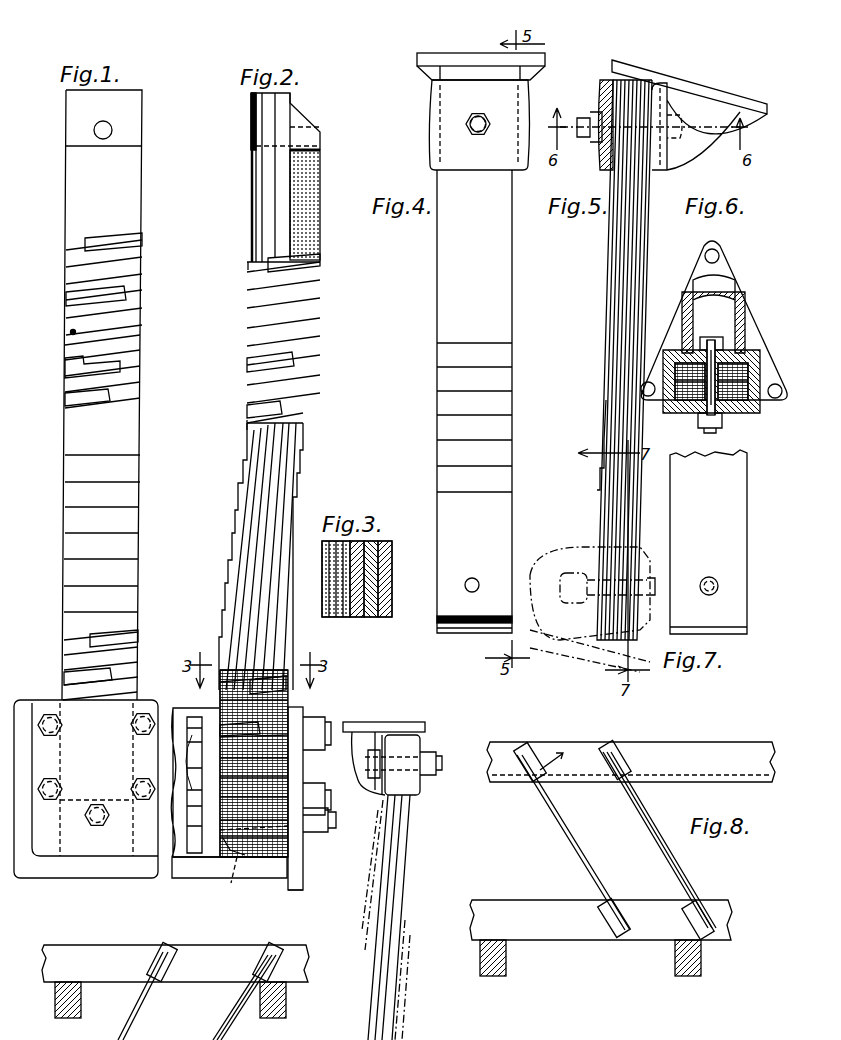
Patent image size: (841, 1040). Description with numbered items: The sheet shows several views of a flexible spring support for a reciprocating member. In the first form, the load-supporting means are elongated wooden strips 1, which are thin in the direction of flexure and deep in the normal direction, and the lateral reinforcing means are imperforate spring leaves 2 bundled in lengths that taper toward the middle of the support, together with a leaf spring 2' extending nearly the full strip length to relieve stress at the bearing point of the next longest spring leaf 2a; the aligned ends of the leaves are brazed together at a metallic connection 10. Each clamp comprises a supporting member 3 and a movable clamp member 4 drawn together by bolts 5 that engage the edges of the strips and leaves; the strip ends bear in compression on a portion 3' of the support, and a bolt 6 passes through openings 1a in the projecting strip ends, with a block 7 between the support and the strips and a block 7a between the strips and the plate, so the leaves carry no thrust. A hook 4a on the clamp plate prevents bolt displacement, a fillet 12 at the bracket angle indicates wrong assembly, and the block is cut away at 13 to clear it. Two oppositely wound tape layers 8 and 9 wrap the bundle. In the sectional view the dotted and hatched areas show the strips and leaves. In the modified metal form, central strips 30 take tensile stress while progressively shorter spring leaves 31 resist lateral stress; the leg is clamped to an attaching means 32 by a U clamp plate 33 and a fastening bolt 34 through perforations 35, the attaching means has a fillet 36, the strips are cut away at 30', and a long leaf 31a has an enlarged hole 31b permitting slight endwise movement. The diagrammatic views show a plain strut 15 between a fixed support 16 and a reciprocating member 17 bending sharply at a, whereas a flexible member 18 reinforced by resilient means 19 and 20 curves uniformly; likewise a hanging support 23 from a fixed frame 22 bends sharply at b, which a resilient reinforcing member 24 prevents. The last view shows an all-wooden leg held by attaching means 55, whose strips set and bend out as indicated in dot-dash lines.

In FIG. 1, the load-supporting strip 1 is at (143, 125).
In FIG. 2, the load-supporting strip 1 is at (256, 218).
In FIG. 3, the load-supporting strip 1 is at (370, 626).
In FIG. 9a, the load-supporting strip 1 is at (386, 917).
In FIG. 1, the opening 1a is at (97, 124).
In FIG. 1, the spring leaf 2 is at (117, 379).
In FIG. 2, the spring leaf 2 is at (272, 461).
In FIG. 3, the spring leaf 2 is at (324, 579).
In FIG. 2, the leaf spring 2' is at (265, 455).
In FIG. 3, the leaf spring 2' is at (382, 579).
In FIG. 2, the next longest spring leaf 2a is at (240, 465).
In FIG. 1, the supporting member 3 is at (86, 802).
In FIG. 2, the supporting member 3 is at (222, 807).
In FIG. 2, the portion of the support 3' is at (230, 883).
In FIG. 2, the movable clamp member 4 is at (303, 768).
In FIG. 2, the hook 4a is at (290, 892).
In FIG. 1, the bolt 5 is at (131, 727).
In FIG. 2, the bolt 5 is at (312, 722).
In FIG. 1, the bolt 6 is at (86, 826).
In FIG. 2, the bolt 6 is at (336, 820).
In FIG. 2, the block 7 is at (312, 112).
In FIG. 2, the block 7a is at (250, 112).
In FIG. 1, the wrapping layer 8 is at (75, 268).
In FIG. 2, the wrapping layer 8 is at (306, 286).
In FIG. 1, the wrapping layer 9 is at (70, 333).
In FIG. 2, the wrapping layer 9 is at (302, 322).
In FIG. 2, the metallic connection 10 is at (321, 158).
In FIG. 2, the fillet 12 is at (240, 857).
In FIG. 2, the cut-away 13 is at (224, 850).
In FIG. 8, the flexible strut 15 is at (560, 846).
In FIG. 8, the fixed support 16 is at (533, 941).
In FIG. 8, the reciprocating member 17 is at (631, 762).
In FIG. 8, the flexible member 18 is at (650, 836).
In FIG. 8, the resilient reinforcing means 19 is at (645, 812).
In FIG. 8, the resilient reinforcing means 20 is at (682, 892).
In FIG. 9, the fixed frame 22 is at (175, 981).
In FIG. 9, the flexible support 23 is at (140, 1030).
In FIG. 9, the resilient lateral reinforcing member 24 is at (243, 1000).
In FIG. 5, the central strip 30 is at (638, 63).
In FIG. 6, the central strip 30 is at (731, 376).
In FIG. 7, the central strip 30 is at (722, 624).
In FIG. 5, the cut-away 30' is at (667, 72).
In FIG. 4, the spring leaf 31 is at (498, 387).
In FIG. 5, the spring leaf 31 is at (661, 194).
In FIG. 6, the spring leaf 31 is at (770, 350).
In FIG. 4, the long spring leaf 31a is at (510, 320).
In FIG. 5, the long spring leaf 31a is at (607, 251).
In FIG. 7, the long spring leaf 31a is at (708, 542).
In FIG. 7, the enlarged hole 31b is at (718, 568).
In FIG. 4, the attaching means 32 is at (528, 74).
In FIG. 5, the attaching means 32 is at (730, 92).
In FIG. 6, the attaching means 32 is at (735, 325).
In FIG. 4, the U clamp plate 33 is at (499, 167).
In FIG. 5, the U clamp plate 33 is at (599, 156).
In FIG. 6, the U clamp plate 33 is at (738, 414).
In FIG. 4, the fastening bolt 34 is at (500, 104).
In FIG. 5, the fastening bolt 34 is at (592, 114).
In FIG. 6, the fastening bolt 34 is at (700, 420).
In FIG. 5, the perforation 35 is at (592, 609).
In FIG. 7, the perforation 35 is at (712, 596).
In FIG. 5, the fillet 36 is at (690, 104).
In FIG. 9a, the attaching means 55 is at (406, 790).
In FIG. 8, the sharp bend point a is at (526, 782).
In FIG. 9, the sharp bend point b is at (142, 980).